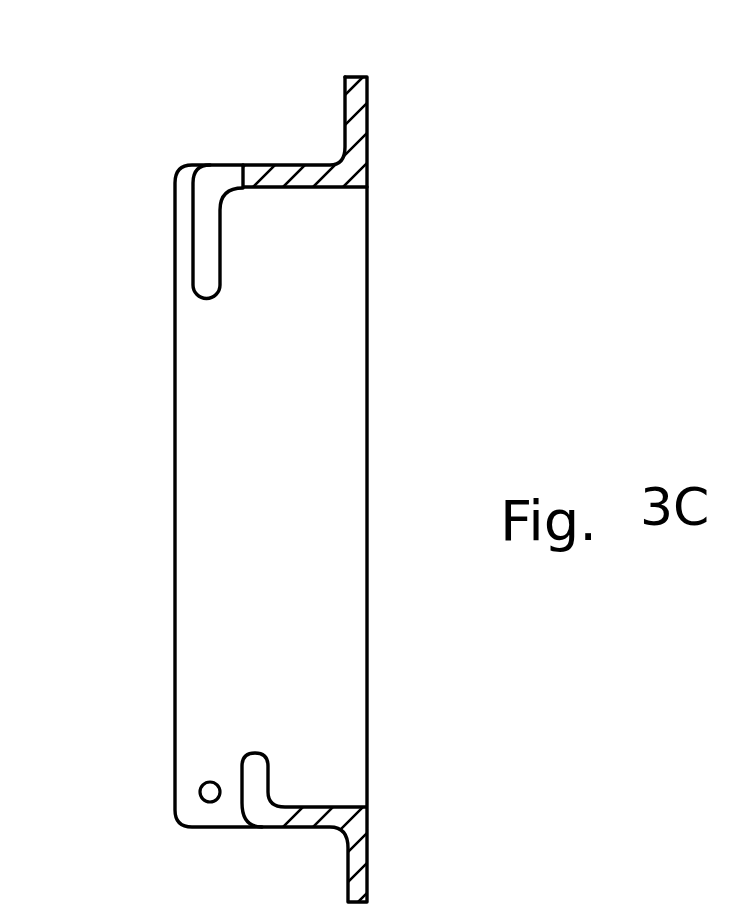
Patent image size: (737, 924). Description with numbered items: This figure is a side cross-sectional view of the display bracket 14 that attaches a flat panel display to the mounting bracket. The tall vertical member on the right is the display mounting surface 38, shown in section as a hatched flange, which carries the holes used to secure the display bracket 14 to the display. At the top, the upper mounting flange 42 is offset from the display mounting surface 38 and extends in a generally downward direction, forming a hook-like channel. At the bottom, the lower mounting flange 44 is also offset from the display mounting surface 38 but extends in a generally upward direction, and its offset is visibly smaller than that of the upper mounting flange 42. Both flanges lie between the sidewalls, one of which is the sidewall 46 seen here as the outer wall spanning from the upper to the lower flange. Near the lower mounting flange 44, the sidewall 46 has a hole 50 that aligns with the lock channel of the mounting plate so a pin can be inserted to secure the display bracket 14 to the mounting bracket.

The display bracket 14 is at (355, 75).
The display mounting surface 38 is at (369, 115).
The upper mounting flange 42 is at (205, 289).
The lower mounting flange 44 is at (250, 757).
The sidewall 46 is at (190, 518).
The hole 50 is at (199, 791).